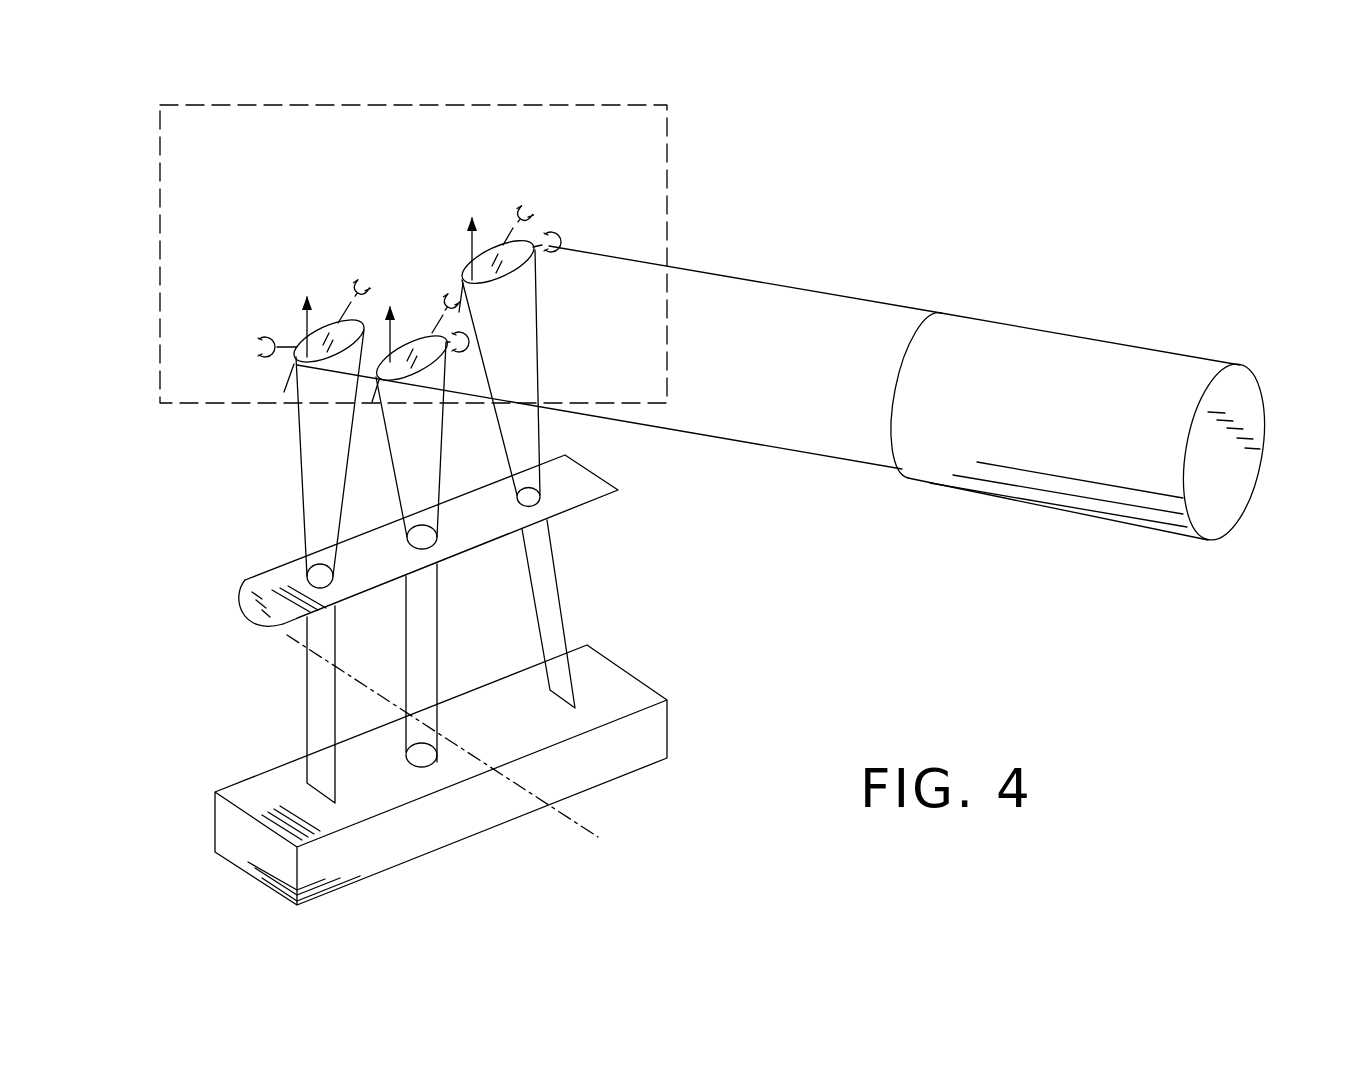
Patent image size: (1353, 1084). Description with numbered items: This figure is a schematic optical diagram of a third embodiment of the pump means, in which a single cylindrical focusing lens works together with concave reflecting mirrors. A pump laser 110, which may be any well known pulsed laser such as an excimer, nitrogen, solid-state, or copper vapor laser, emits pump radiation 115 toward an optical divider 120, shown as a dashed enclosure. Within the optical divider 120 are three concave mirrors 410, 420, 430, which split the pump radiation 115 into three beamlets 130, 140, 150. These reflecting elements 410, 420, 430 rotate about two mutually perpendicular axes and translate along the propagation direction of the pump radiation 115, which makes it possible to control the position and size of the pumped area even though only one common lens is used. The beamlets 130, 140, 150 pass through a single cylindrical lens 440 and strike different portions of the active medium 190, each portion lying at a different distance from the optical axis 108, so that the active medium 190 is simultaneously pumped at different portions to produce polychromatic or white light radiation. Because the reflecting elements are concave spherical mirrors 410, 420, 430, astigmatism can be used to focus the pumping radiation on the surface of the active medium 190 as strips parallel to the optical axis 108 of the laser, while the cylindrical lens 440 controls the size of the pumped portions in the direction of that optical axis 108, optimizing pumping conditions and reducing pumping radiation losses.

The optical axis 108 is at (585, 828).
The pump laser 110 is at (1027, 365).
The pump radiation 115 is at (747, 312).
The optical divider 120 is at (178, 160).
The beamlet 130 is at (323, 500).
The beamlet 140 is at (413, 487).
The beamlet 150 is at (525, 443).
The active medium 190 is at (267, 783).
The concave mirror 410 is at (338, 318).
The concave mirror 420 is at (432, 333).
The concave mirror 430 is at (503, 240).
The cylindrical lens 440 is at (250, 603).